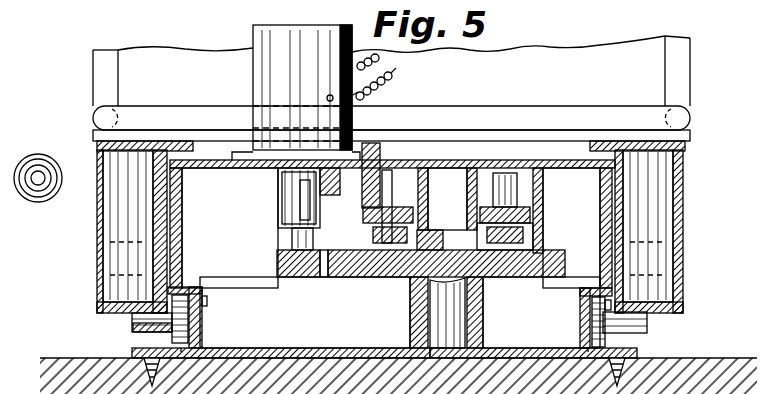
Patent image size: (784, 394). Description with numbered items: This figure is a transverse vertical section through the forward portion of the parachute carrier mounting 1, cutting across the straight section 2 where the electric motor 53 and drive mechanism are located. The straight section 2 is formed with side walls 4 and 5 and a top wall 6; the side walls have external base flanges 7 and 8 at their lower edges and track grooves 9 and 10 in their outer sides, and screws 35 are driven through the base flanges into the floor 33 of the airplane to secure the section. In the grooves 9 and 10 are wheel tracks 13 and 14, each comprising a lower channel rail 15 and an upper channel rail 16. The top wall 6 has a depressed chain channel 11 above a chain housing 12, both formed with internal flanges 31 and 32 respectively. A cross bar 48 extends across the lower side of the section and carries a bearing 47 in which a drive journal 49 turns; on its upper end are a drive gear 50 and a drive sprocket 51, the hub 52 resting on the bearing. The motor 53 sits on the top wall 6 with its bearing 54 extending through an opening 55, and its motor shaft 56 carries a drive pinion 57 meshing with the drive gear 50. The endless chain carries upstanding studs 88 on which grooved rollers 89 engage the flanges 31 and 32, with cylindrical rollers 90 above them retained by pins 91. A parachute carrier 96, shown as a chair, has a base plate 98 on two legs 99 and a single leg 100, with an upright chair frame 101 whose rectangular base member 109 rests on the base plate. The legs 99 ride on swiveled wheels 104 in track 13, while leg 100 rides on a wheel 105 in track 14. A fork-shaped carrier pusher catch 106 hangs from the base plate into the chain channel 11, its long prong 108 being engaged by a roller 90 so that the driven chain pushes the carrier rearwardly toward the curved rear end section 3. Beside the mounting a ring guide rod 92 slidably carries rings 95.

The parachute carrier mounting 1 is at (470, 168).
The straight section 2 is at (165, 243).
The curved rear end section 3 is at (649, 231).
The side wall 4 is at (183, 236).
The side wall 5 is at (604, 216).
The top wall 6 is at (220, 170).
The base flange 7 is at (133, 351).
The base flange 8 is at (640, 352).
The track groove 9 is at (202, 322).
The track groove 10 is at (582, 330).
The chain channel 11 is at (372, 185).
The chain housing 12 is at (545, 185).
The wheel track 13 is at (160, 338).
The wheel track 14 is at (620, 342).
The lower channel rail 15 is at (192, 350).
The upper channel rail 16 is at (181, 294).
The internal flange 31 is at (362, 222).
The internal flange 32 is at (452, 225).
The floor 33 is at (55, 356).
The screw 35 is at (148, 372).
The bearing 47 is at (483, 320).
The cross bar 48 is at (305, 337).
The drive journal 49 is at (440, 320).
The drive gear 50 is at (360, 278).
The drive sprocket 51 is at (430, 235).
The hub 52 is at (490, 285).
The electric motor 53 is at (262, 68).
The motor bearing 54 is at (300, 210).
The opening 55 is at (281, 176).
The motor shaft 56 is at (292, 238).
The drive pinion 57 is at (280, 262).
The stud 88 is at (388, 170).
The grooved roller 89 is at (362, 212).
The cylindrical roller 90 is at (410, 175).
The pin 91 is at (395, 165).
The ring guide rod 92 is at (38, 170).
The ring 95 is at (32, 201).
The parachute carrier 96 is at (93, 78).
The base plate 98 is at (682, 136).
The leg 99 is at (128, 208).
The leg 100 is at (673, 255).
The upright chair frame 101 is at (694, 83).
The swiveled wheel 104 is at (196, 312).
The wheel 105 is at (597, 312).
The carrier pusher catch 106 is at (300, 192).
The long prong 108 is at (400, 168).
The rectangular base member 109 is at (694, 122).